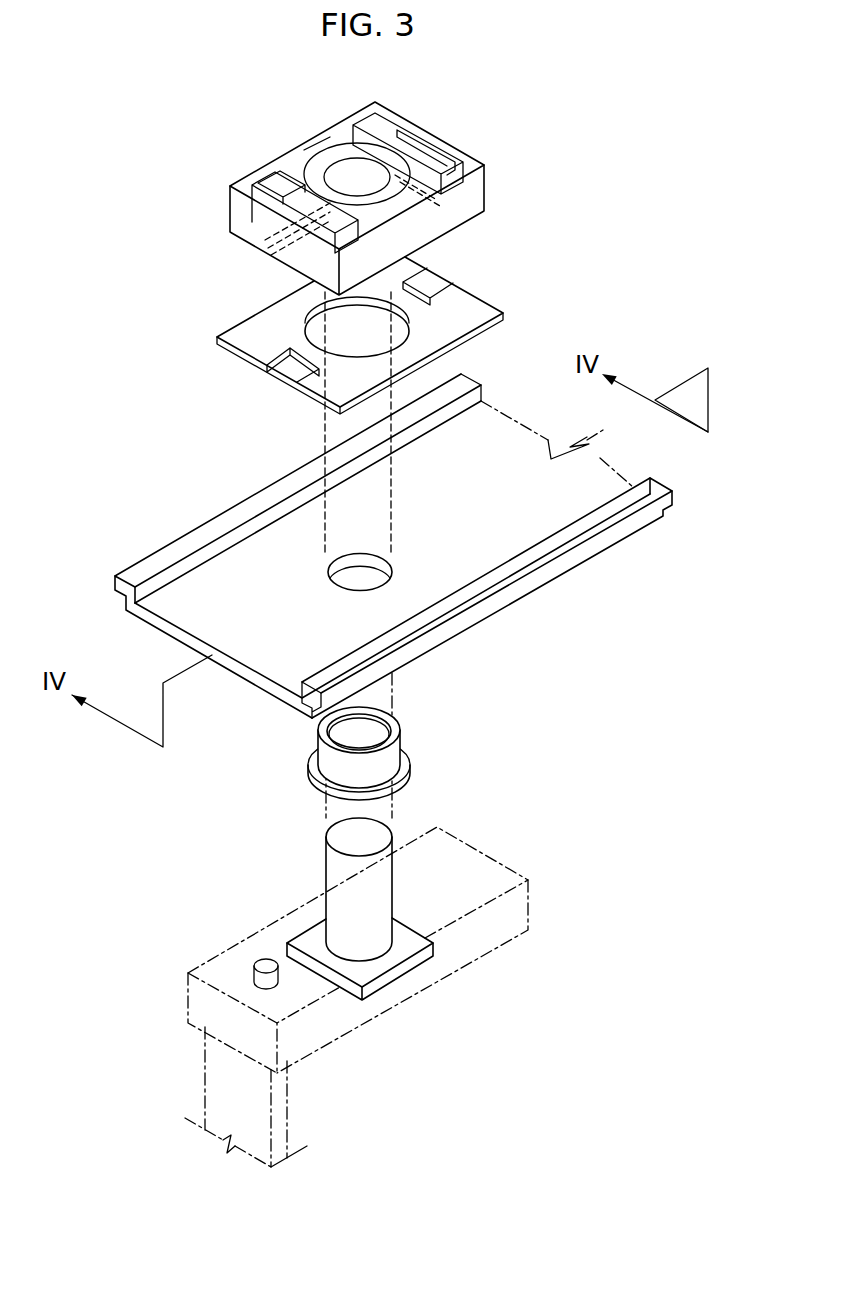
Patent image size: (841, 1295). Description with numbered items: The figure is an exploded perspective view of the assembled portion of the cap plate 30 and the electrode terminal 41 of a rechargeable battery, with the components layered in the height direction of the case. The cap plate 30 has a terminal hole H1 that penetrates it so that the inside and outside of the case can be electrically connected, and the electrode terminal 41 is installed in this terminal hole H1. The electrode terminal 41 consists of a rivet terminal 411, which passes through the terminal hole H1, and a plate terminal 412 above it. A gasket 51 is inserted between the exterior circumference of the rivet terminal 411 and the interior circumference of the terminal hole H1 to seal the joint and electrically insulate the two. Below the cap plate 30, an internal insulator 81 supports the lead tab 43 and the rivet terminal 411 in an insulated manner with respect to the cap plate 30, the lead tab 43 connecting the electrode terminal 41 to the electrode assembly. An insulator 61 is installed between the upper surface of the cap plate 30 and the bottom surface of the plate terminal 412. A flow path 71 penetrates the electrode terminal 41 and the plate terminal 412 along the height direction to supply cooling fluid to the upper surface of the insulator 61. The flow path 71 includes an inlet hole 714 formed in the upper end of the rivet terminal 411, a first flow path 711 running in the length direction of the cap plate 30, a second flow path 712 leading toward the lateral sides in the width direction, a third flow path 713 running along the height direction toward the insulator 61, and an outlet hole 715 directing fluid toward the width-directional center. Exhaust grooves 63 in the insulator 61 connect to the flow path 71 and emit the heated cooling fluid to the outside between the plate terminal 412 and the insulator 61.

The flow path 71 is at (278, 196).
The inlet hole 714 is at (312, 161).
The first flow path 711 is at (252, 183).
The second flow path 712 is at (258, 190).
The third flow path 713 is at (300, 200).
The outlet hole 715 is at (300, 254).
The plate terminal 412 is at (478, 192).
The exhaust grooves 63 is at (436, 286).
The insulator 61 is at (342, 330).
The terminal hole H1 is at (333, 567).
The cap plate 30 is at (393, 546).
The rivet terminal 411 is at (327, 865).
The electrode terminal 41 is at (454, 594).
The gasket 51 is at (290, 790).
The internal insulator 81 is at (478, 860).
The lead tab 43 is at (283, 1103).